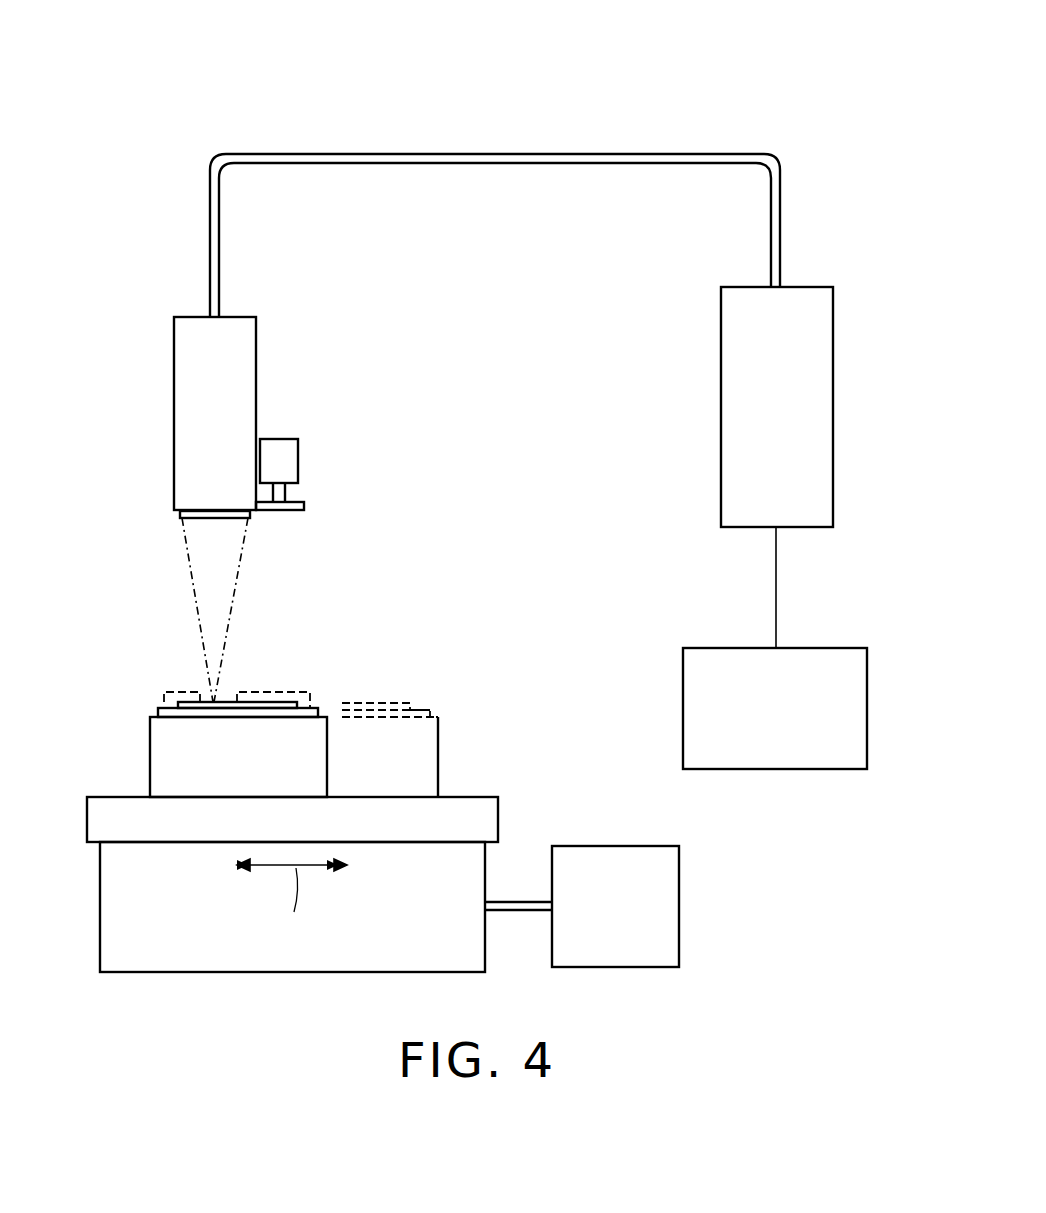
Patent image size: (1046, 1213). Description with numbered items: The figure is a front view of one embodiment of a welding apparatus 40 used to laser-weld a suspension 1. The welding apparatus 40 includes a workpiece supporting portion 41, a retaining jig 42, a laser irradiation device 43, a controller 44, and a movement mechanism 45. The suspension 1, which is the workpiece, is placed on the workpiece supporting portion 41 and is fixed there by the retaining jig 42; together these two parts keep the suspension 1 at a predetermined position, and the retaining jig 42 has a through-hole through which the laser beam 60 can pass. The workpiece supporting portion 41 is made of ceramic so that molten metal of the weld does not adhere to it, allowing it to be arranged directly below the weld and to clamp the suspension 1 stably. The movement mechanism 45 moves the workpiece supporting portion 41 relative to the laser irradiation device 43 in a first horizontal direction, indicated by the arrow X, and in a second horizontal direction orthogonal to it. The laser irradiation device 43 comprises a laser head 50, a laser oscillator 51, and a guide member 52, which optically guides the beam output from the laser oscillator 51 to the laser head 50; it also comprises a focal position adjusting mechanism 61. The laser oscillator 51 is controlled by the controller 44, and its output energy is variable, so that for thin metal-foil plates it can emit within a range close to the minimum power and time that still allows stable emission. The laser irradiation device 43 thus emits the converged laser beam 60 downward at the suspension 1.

The welding apparatus 40 is at (574, 92).
The guide member 52 is at (383, 153).
The laser irradiation device 43 is at (148, 513).
The laser head 50 is at (174, 390).
The focal position adjusting mechanism 61 is at (298, 456).
The laser beam 60 is at (190, 585).
The suspension 1 is at (226, 702).
The retaining jig 42 is at (296, 692).
The workpiece supporting portion 41 is at (168, 708).
The movement mechanism 45 is at (610, 846).
The controller 44 is at (712, 648).
The laser oscillator 51 is at (721, 410).